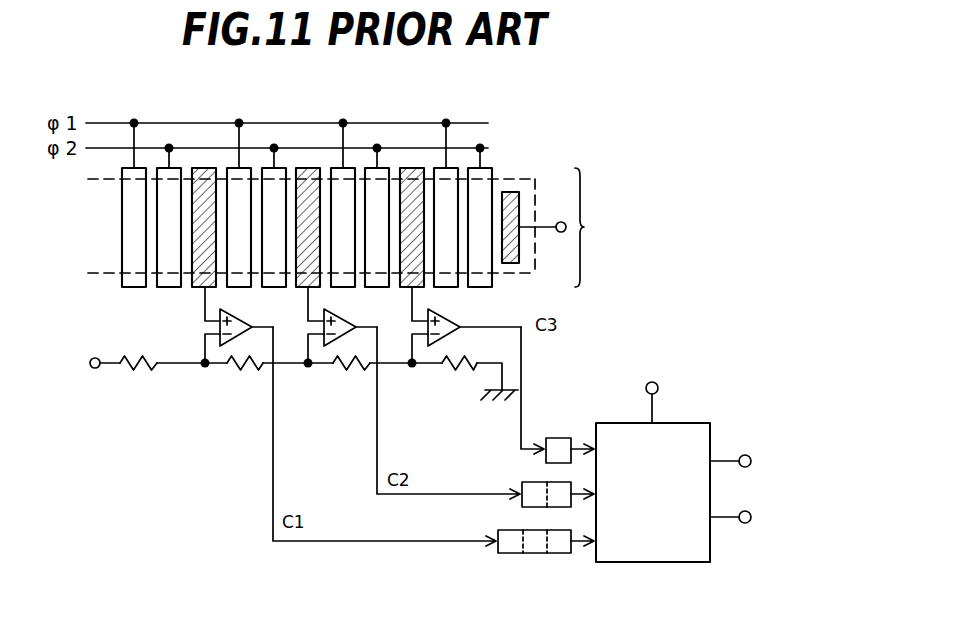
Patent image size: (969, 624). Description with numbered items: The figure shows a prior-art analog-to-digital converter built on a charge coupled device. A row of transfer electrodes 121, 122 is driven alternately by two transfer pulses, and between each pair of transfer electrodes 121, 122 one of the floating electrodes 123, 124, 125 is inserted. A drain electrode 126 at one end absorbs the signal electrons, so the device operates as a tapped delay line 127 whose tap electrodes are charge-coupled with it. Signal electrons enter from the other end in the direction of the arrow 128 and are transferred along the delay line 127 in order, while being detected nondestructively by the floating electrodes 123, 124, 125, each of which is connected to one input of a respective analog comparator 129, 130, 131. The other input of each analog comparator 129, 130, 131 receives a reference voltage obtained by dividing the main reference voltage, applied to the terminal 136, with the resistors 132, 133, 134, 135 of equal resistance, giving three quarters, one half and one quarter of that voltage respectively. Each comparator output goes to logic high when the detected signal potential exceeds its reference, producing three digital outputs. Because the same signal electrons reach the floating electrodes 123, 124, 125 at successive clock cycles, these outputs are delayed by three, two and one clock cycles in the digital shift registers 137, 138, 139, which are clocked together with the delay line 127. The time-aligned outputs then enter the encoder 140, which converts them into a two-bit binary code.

The transfer electrode 121 is at (134, 287).
The transfer electrode 122 is at (169, 287).
The floating electrode 123 is at (204, 168).
The floating electrode 124 is at (308, 168).
The floating electrode 125 is at (412, 168).
The drain electrode 126 is at (511, 192).
The tapped delay line 127 is at (601, 227).
The arrow 128 is at (100, 232).
The analog comparator 129 is at (229, 339).
The analog comparator 130 is at (333, 339).
The analog comparator 131 is at (437, 339).
The resistor 132 is at (141, 372).
The resistor 133 is at (246, 372).
The resistor 134 is at (351, 372).
The resistor 135 is at (455, 372).
The terminal 136 is at (92, 359).
The digital shift register 137 is at (517, 530).
The digital shift register 138 is at (525, 482).
The digital shift register 139 is at (553, 438).
The encoder 140 is at (596, 562).